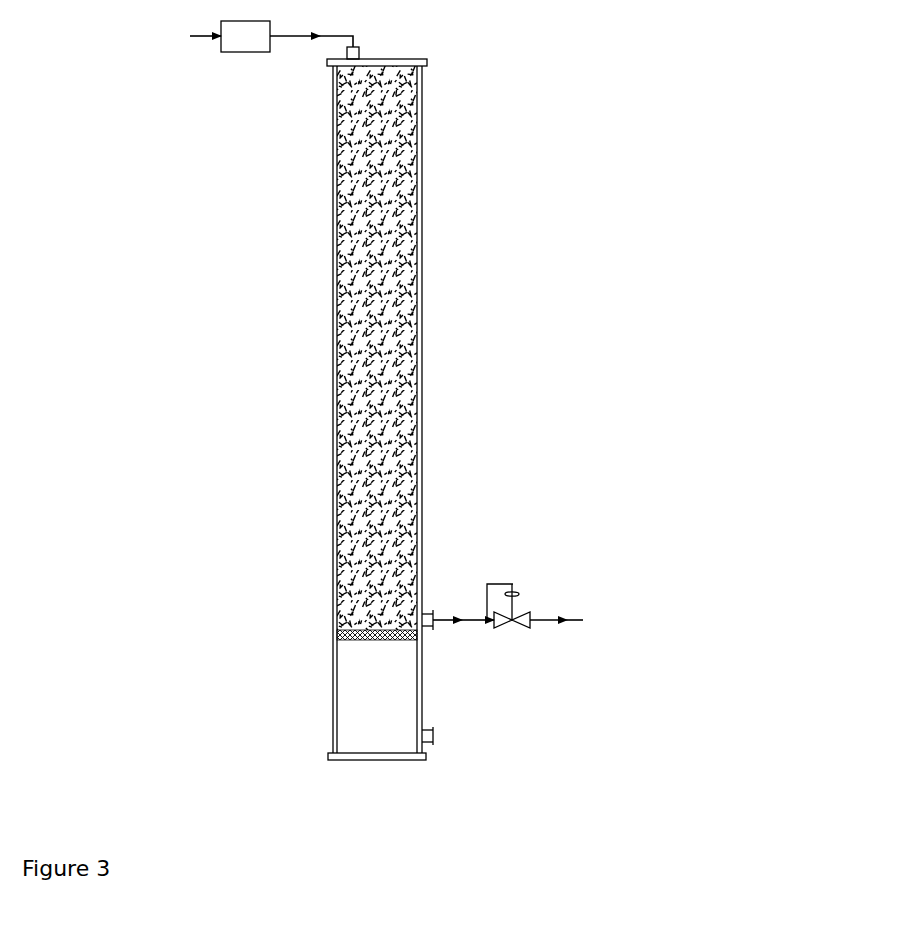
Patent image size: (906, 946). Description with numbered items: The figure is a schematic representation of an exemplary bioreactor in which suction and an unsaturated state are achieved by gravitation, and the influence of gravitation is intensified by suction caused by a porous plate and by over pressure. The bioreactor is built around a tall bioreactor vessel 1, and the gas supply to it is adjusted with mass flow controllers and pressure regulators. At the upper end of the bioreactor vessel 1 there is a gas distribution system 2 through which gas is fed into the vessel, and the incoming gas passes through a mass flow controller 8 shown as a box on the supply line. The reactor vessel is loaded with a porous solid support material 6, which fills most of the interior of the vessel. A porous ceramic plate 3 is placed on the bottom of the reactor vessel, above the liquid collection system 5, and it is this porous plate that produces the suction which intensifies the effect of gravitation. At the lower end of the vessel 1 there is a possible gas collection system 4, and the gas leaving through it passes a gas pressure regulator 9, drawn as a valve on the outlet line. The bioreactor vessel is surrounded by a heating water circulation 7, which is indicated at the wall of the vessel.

The bioreactor vessel 1 is at (422, 144).
The gas distribution system 2 is at (274, 60).
The porous ceramic plate 3 is at (363, 640).
The gas collection system 4 is at (458, 610).
The liquid collection system 5 is at (443, 737).
The porous solid support material 6 is at (356, 308).
The heating water circulation 7 is at (333, 180).
The mass flow controller 8 is at (245, 36).
The gas pressure regulator 9 is at (535, 623).